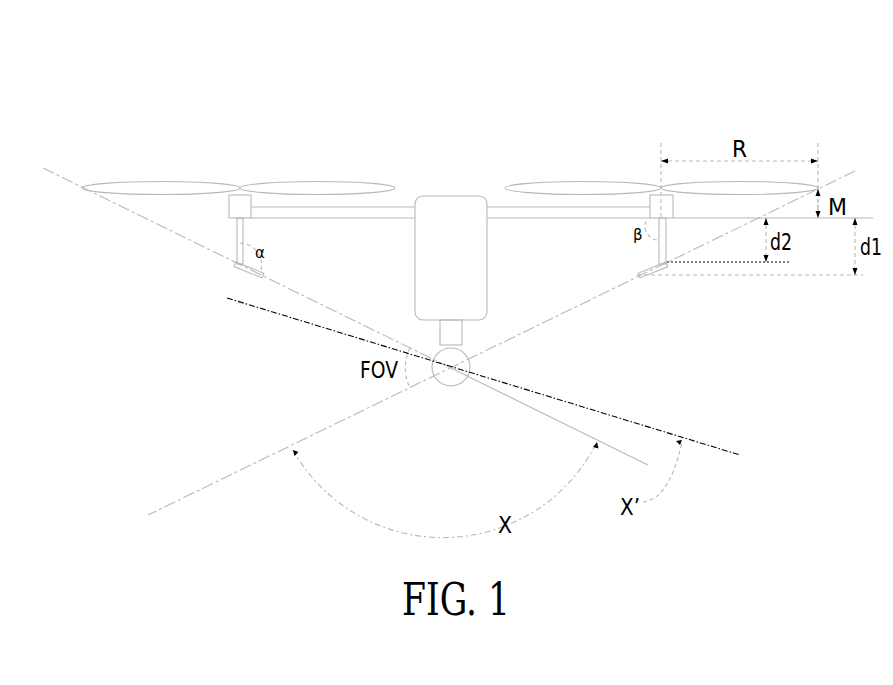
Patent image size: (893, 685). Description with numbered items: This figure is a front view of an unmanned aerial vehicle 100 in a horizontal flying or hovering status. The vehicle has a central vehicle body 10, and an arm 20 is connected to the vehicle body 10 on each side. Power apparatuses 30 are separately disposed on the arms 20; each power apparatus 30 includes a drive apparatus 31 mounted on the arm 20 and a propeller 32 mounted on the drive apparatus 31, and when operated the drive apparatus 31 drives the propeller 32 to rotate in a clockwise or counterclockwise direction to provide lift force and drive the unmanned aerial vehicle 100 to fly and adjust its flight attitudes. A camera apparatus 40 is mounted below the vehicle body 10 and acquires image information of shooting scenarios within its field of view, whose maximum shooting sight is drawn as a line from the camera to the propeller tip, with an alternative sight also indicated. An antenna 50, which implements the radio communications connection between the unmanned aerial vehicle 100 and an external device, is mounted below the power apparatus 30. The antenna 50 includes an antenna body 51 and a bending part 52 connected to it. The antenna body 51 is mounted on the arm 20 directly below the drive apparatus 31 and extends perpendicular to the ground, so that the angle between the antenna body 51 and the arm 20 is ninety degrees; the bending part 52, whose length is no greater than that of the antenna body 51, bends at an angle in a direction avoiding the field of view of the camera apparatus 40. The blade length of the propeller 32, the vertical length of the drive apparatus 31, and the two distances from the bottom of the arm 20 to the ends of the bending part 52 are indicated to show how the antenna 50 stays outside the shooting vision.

The unmanned aerial vehicle 100 is at (530, 53).
The vehicle body 10 is at (453, 207).
The arm 20 is at (380, 220).
The power apparatus 30 is at (253, 93).
The drive apparatus 31 is at (241, 205).
The propeller 32 is at (165, 181).
The camera apparatus 40 is at (452, 378).
The antenna 50 is at (110, 250).
The antenna body 51 is at (237, 240).
The bending part 52 is at (247, 267).